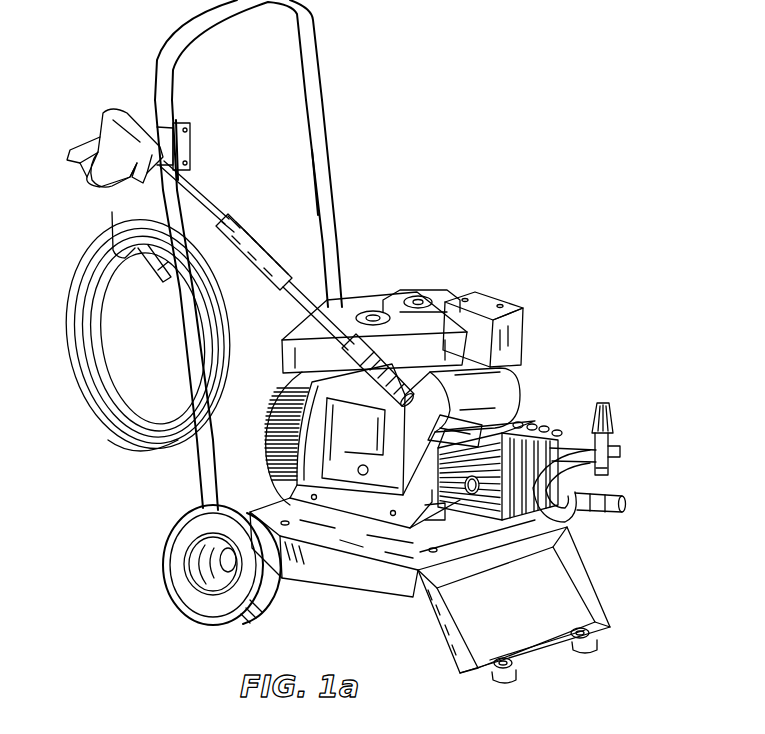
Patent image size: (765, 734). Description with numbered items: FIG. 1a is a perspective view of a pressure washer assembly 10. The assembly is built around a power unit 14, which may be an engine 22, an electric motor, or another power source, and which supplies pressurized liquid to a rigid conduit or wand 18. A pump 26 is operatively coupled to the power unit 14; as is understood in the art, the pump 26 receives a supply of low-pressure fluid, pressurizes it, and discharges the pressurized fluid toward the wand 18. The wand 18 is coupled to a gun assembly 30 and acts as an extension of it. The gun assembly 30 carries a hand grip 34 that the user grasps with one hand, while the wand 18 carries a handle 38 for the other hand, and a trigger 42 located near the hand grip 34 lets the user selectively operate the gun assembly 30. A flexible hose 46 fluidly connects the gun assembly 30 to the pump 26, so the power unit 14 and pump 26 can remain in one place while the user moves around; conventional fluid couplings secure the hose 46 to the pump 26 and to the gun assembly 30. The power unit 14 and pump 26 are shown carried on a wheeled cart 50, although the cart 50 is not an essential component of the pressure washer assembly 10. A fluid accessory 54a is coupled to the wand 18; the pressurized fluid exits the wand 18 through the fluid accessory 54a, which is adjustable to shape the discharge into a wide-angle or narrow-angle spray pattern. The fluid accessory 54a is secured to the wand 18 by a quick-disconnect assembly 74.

The pressure washer assembly 10 is at (527, 247).
The power unit 14 is at (533, 388).
The wand 18 is at (205, 196).
The engine 22 is at (352, 300).
The pump 26 is at (472, 486).
The gun assembly 30 is at (116, 142).
The hand grip 34 is at (100, 140).
The handle 38 is at (254, 236).
The trigger 42 is at (95, 183).
The flexible hose 46 is at (85, 396).
The wheeled cart 50 is at (374, 579).
The fluid accessory 54a is at (452, 343).
The quick-disconnect assembly 74 is at (326, 358).